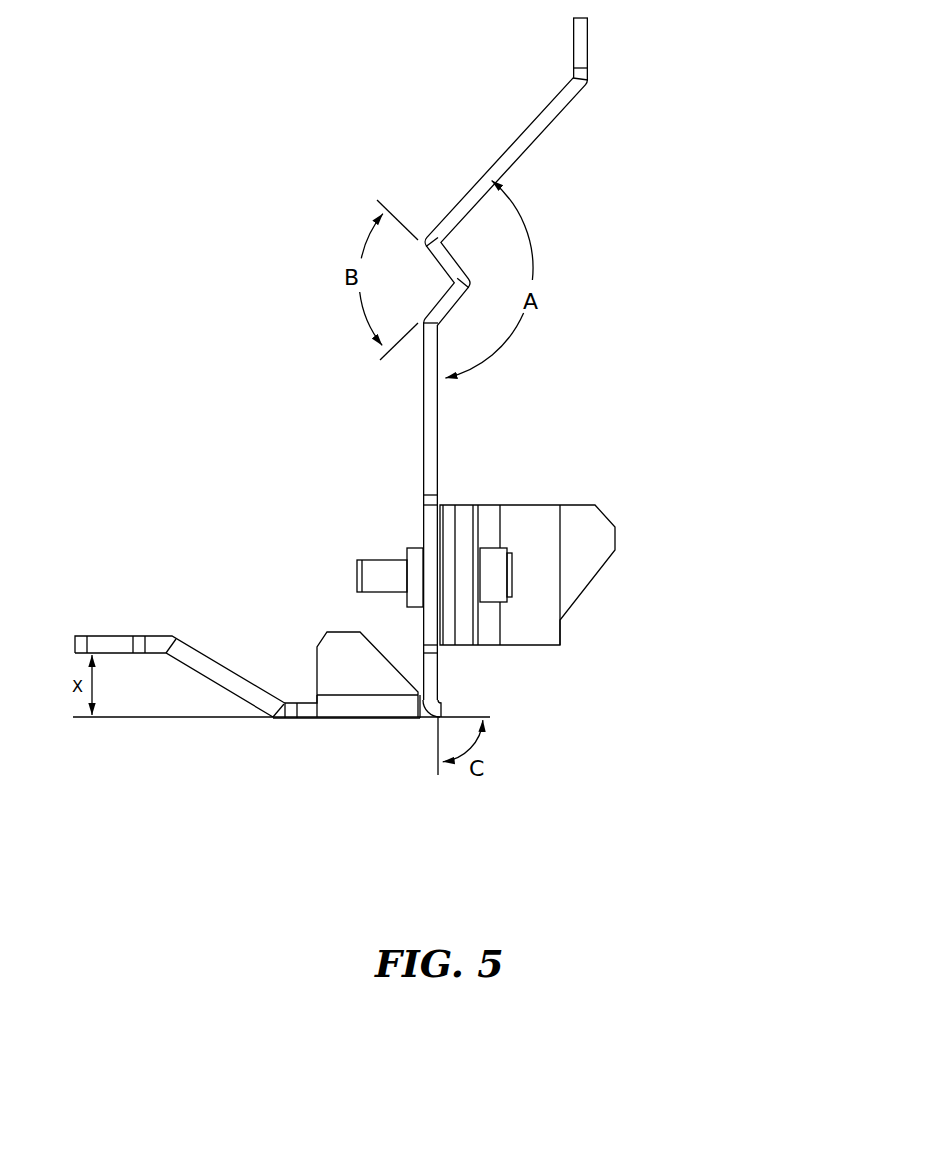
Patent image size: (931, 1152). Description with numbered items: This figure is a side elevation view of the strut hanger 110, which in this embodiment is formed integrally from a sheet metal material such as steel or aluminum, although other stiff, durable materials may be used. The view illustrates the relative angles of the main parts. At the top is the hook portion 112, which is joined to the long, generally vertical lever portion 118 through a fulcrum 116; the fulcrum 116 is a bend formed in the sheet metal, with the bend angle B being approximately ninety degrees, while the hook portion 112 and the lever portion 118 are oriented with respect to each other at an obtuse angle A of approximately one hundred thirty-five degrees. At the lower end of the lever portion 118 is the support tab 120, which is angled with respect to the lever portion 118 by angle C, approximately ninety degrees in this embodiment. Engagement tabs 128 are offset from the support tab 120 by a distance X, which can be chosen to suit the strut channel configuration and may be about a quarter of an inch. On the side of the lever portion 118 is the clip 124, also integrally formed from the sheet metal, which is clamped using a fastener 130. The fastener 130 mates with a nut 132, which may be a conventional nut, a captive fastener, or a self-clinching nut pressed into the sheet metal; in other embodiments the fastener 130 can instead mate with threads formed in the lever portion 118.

The strut hanger 110 is at (207, 267).
The hook portion 112 is at (518, 117).
The fulcrum 116 is at (478, 265).
The lever portion 118 is at (402, 438).
The support tab 120 is at (343, 730).
The clip 124 is at (628, 558).
The engagement tabs 128 is at (123, 637).
The fastener 130 is at (495, 552).
The nut 132 is at (417, 548).